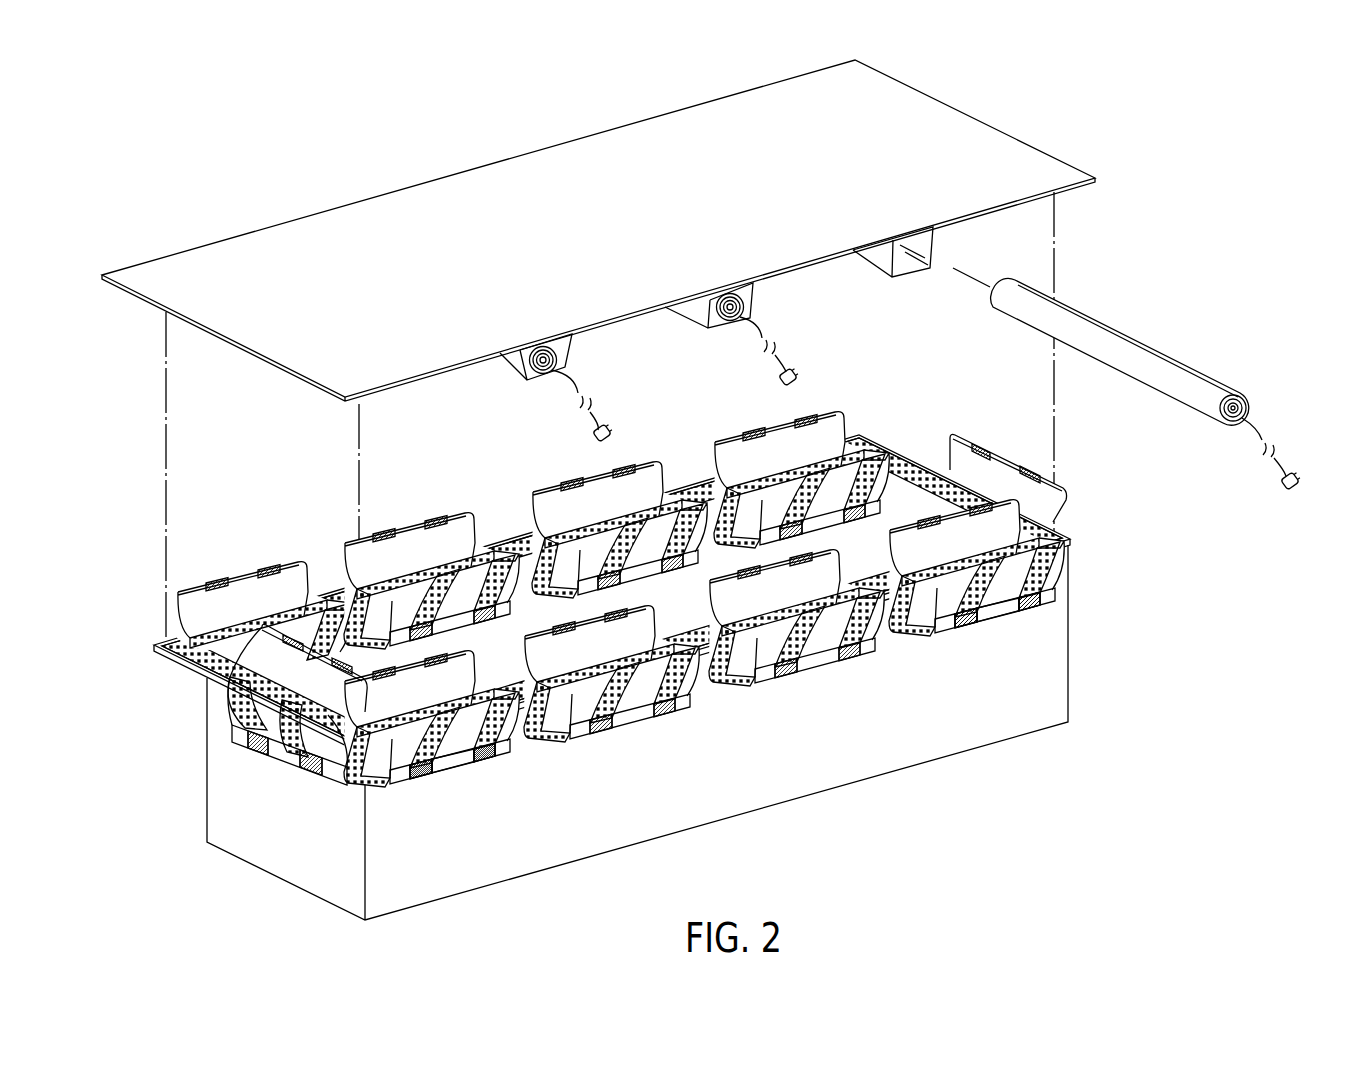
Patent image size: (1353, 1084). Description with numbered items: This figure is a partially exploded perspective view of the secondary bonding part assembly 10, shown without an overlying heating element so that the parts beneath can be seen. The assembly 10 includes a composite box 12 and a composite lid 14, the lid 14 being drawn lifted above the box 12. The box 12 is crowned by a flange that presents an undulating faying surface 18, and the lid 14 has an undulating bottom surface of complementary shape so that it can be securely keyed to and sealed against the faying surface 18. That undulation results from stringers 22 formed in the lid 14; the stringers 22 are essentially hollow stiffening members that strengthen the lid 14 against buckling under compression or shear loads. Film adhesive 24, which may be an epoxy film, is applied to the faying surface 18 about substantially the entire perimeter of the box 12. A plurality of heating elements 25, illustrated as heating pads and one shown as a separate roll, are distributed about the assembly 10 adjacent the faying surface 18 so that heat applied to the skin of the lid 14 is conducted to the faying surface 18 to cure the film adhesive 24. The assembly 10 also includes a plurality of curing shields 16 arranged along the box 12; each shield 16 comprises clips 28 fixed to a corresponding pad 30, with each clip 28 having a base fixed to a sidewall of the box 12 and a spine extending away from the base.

The secondary bonding part assembly 10 is at (1104, 132).
The composite box 12 is at (190, 817).
The composite lid 14 is at (643, 110).
The curing shields 16 is at (238, 566).
The faying surface 18 is at (160, 640).
The stringers 22 is at (520, 358).
The film adhesive 24 is at (200, 653).
The heating elements 25 is at (526, 380).
The clips 28 is at (404, 782).
The pad 30 is at (436, 782).